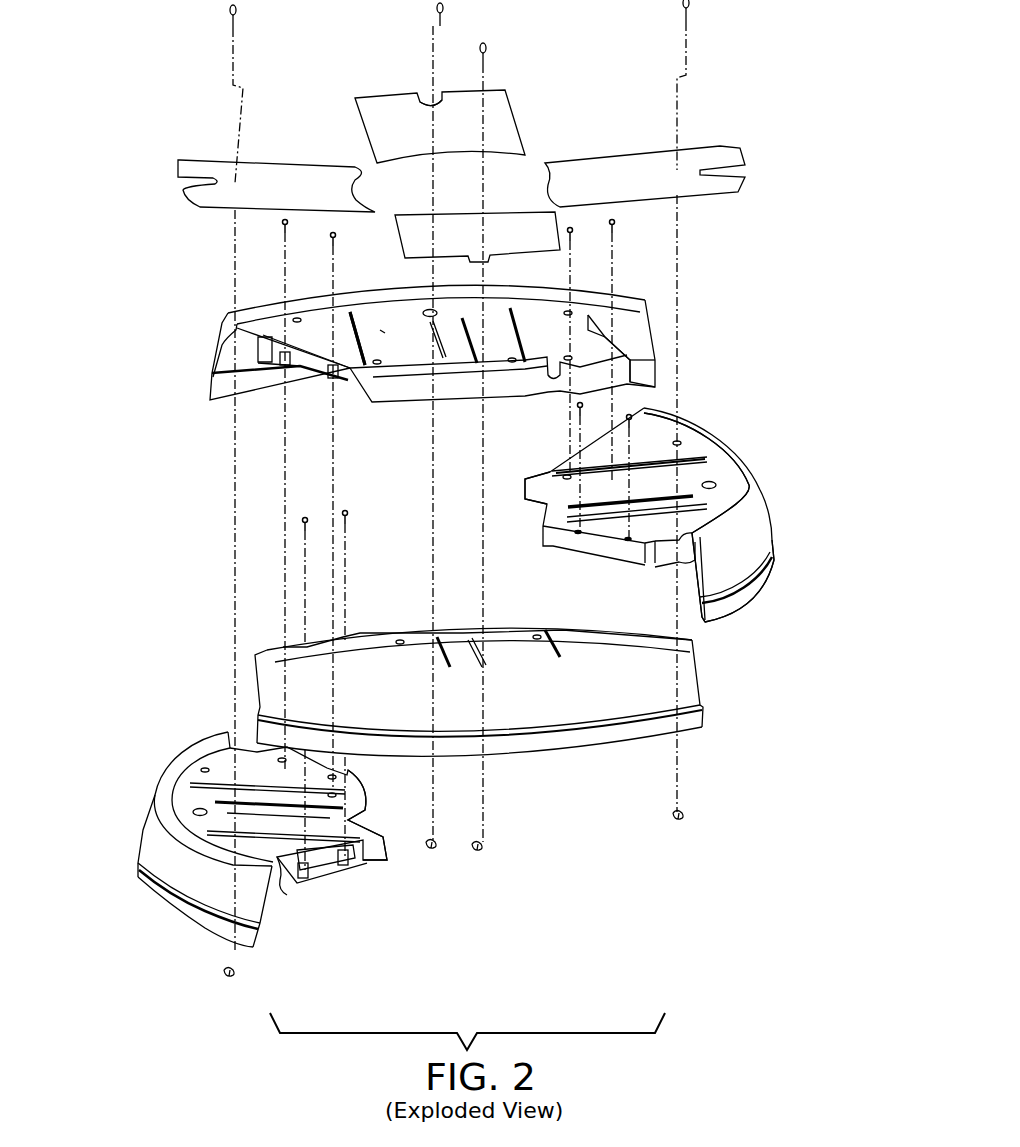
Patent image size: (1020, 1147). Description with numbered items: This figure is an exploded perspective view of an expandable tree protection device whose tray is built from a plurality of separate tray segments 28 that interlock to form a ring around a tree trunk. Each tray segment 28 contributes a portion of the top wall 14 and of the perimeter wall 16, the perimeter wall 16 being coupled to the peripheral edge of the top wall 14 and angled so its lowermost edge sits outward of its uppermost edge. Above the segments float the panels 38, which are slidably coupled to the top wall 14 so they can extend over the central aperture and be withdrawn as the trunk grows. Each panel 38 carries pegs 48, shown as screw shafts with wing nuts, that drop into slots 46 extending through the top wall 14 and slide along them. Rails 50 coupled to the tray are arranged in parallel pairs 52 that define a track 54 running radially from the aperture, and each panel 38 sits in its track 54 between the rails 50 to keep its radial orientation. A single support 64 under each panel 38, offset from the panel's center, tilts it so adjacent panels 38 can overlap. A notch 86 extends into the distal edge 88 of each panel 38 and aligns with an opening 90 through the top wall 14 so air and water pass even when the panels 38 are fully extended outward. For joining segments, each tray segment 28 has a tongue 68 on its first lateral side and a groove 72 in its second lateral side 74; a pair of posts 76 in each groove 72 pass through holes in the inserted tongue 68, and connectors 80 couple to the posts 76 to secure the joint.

The top wall 14 is at (717, 470).
The perimeter wall 16 is at (757, 532).
The tray segment 28 is at (640, 298).
The panel 38 is at (292, 175).
The slot 46 is at (470, 638).
The peg 48 is at (228, 10).
The rail 50 is at (392, 635).
The parallel pair 52 is at (343, 330).
The track 54 is at (386, 333).
The support 64 is at (437, 635).
The tongue 68 is at (620, 350).
The groove 72 is at (310, 372).
The second lateral side 74 is at (285, 900).
The post 76 is at (280, 365).
The connector 80 is at (575, 230).
The notch 86 is at (425, 98).
The distal edge 88 is at (462, 95).
The opening 90 is at (426, 308).